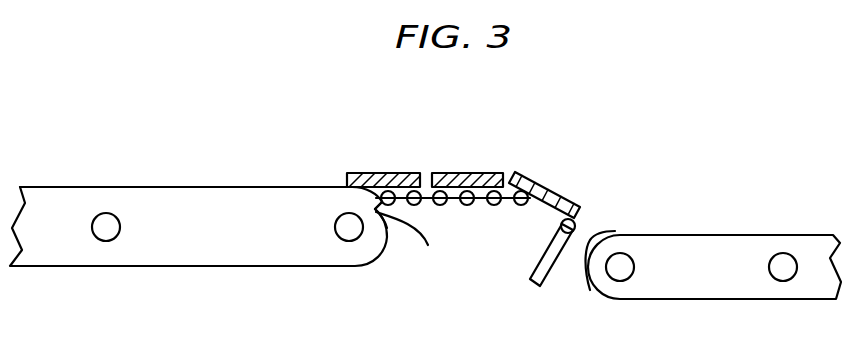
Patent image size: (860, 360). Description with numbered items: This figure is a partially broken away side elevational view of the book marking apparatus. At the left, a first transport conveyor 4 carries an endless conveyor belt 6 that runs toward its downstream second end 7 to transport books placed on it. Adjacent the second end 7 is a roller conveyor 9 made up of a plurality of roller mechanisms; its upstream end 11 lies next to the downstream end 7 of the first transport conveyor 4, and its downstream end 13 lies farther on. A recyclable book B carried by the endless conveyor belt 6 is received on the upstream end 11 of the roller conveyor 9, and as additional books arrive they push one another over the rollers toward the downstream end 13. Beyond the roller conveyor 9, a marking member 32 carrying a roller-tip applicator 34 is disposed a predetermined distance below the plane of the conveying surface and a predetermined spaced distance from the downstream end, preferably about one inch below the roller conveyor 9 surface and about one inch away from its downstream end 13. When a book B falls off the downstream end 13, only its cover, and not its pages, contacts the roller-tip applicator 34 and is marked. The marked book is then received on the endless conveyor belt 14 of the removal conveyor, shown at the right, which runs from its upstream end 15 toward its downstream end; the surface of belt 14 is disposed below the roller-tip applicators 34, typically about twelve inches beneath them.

The first transport conveyor 4 is at (235, 215).
The endless conveyor belt 6 is at (188, 187).
The second end 7 is at (385, 228).
The second transport conveyor device 9 is at (452, 199).
The upstream end 11 is at (428, 245).
The downstream end 13 is at (510, 205).
The book B is at (380, 172).
The endless conveyor belt 14 is at (712, 235).
The upstream end 15 is at (615, 231).
The marking member 32 is at (541, 282).
The roller-tip applicator 34 is at (577, 224).